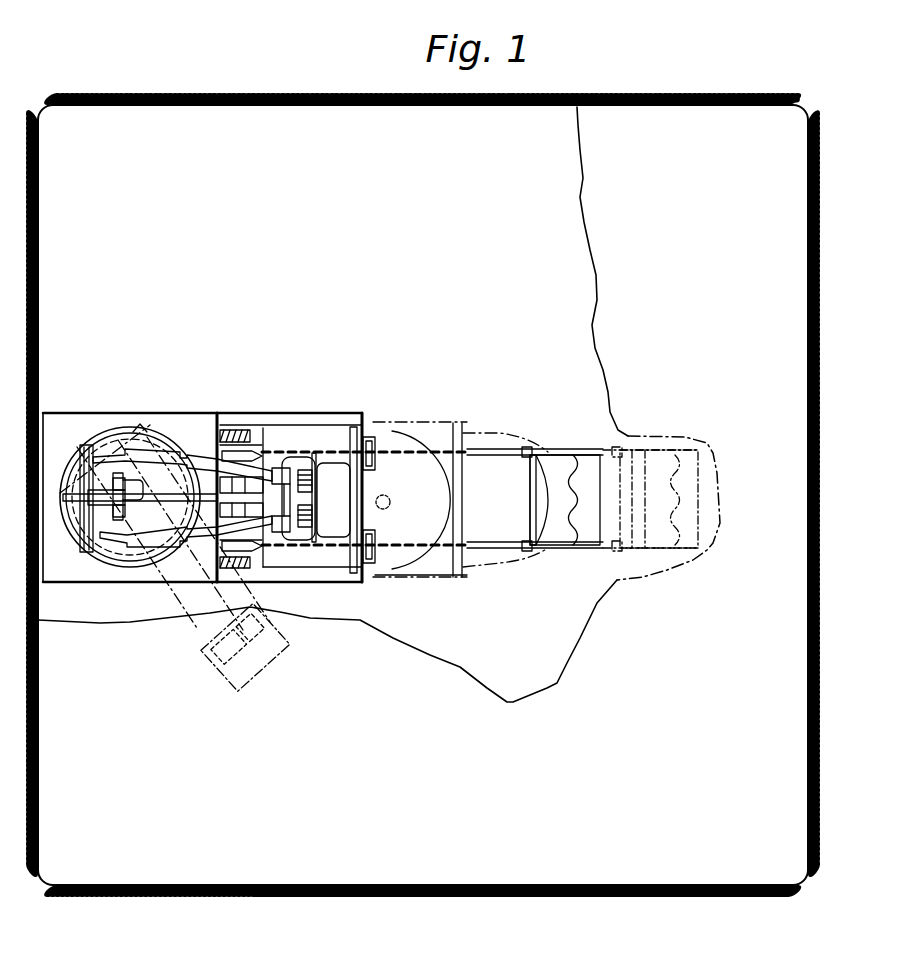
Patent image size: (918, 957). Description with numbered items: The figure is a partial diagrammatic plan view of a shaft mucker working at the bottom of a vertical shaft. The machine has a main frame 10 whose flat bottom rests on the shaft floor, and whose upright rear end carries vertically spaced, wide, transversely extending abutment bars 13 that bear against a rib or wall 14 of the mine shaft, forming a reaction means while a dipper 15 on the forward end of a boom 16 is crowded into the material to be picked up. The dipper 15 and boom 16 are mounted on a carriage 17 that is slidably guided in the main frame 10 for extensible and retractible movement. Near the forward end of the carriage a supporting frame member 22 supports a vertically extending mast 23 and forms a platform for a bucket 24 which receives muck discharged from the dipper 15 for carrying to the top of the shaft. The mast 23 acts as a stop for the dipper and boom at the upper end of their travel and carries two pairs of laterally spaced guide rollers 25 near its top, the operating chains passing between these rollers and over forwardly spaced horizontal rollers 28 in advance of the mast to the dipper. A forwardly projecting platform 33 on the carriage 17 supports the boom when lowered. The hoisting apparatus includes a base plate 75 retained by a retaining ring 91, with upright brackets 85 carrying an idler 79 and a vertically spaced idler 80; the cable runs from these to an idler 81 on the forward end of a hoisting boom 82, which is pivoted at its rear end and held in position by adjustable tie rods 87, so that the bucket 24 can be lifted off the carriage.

The main frame 10 is at (184, 406).
The abutment bars 13 is at (44, 413).
The rib or wall 14 is at (42, 322).
The dipper 15 is at (575, 452).
The boom 16 is at (500, 548).
The carriage 17 is at (428, 578).
The supporting frame member 22 is at (335, 562).
The mast 23 is at (378, 480).
The bucket 24 is at (327, 458).
The guide rollers 25 is at (432, 450).
The horizontal rollers 28 is at (378, 440).
The platform 33 is at (410, 557).
The base plate 75 is at (137, 547).
The idler 79 is at (118, 567).
The idler 80 is at (72, 560).
The idler 81 is at (311, 497).
The boom 82 is at (208, 488).
The upright brackets 85 is at (81, 588).
The adjustable tie rods 87 is at (198, 463).
The retaining ring 91 is at (102, 570).